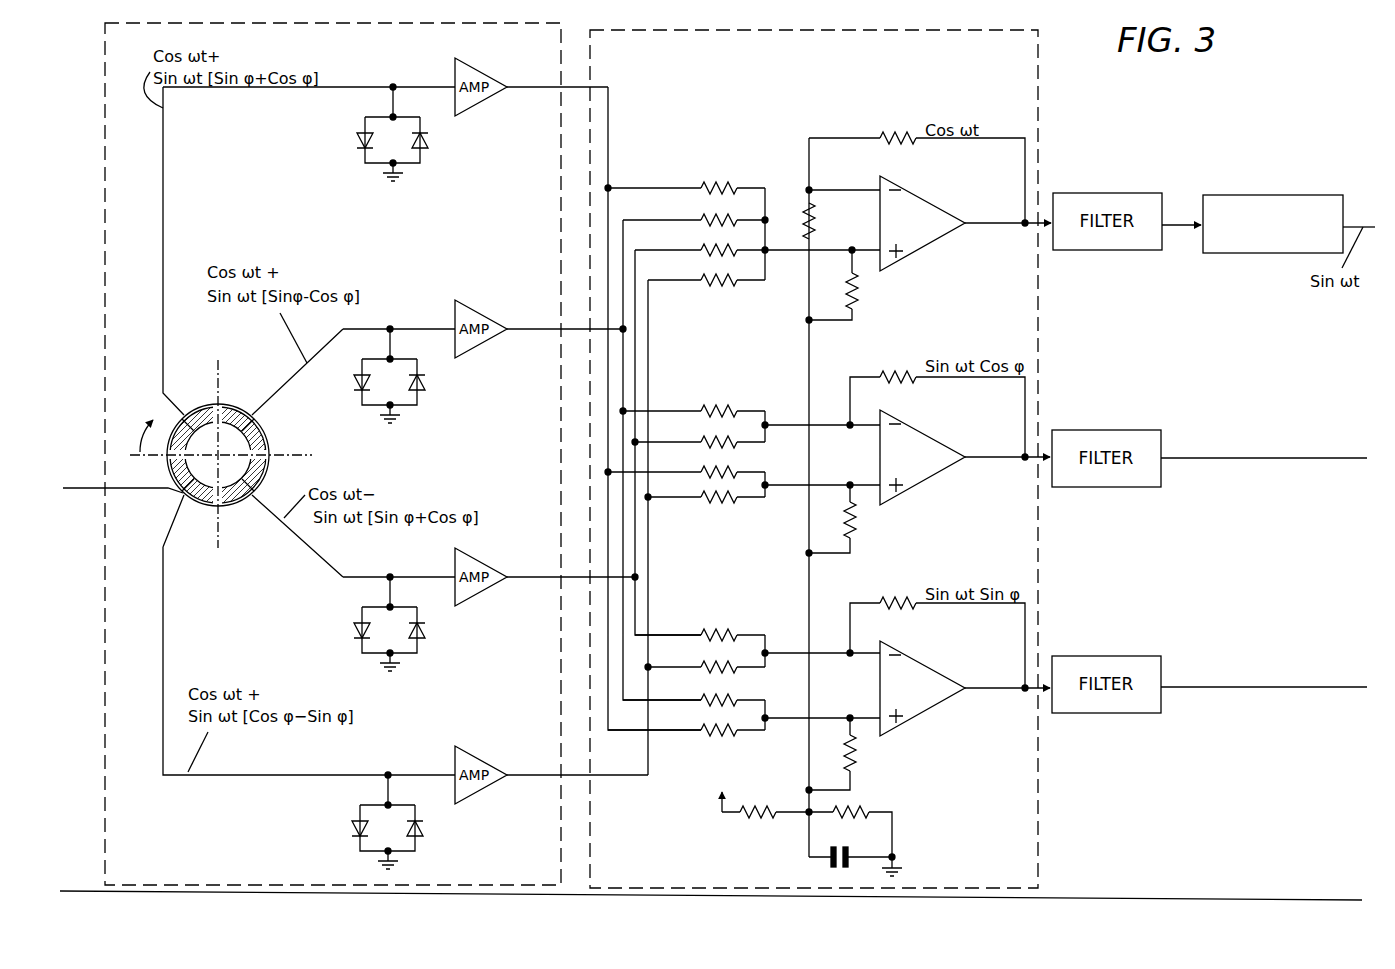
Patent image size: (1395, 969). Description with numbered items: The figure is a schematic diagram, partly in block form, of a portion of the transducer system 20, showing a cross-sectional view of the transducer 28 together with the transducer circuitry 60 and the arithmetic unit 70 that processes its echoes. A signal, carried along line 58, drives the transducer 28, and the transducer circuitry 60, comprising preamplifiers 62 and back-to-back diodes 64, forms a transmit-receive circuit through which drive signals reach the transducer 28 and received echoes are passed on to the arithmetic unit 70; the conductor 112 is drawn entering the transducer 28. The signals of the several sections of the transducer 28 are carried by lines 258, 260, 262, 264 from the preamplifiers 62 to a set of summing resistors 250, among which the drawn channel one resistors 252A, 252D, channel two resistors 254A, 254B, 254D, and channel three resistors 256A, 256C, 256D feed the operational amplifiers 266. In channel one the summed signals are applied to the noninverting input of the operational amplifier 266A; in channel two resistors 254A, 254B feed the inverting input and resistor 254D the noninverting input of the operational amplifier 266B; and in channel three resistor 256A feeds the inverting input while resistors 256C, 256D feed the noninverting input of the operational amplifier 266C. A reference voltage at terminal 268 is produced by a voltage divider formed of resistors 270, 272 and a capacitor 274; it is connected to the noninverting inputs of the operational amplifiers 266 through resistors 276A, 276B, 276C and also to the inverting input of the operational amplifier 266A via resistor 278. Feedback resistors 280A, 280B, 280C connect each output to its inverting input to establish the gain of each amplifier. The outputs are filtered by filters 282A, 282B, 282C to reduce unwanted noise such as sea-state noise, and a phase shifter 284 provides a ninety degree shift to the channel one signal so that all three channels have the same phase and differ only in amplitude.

The transducer circuitry 60 is at (102, 98).
The arithmetic unit 70 is at (1040, 47).
The line 58 is at (1117, 898).
The transducer system 20 is at (1085, 137).
The transducer 28 is at (176, 499).
The conductor 112 is at (85, 489).
The preamplifiers 62 is at (485, 101).
The back-to-back diodes 64 is at (356, 136).
The line 258 is at (524, 87).
The line 260 is at (516, 330).
The line 262 is at (520, 577).
The line 264 is at (520, 775).
The summing resistors 250 is at (742, 481).
The summing resistor 252A is at (668, 188).
The summing resistor 252D is at (680, 281).
The summing resistor 254A is at (682, 411).
The summing resistor 254B is at (678, 443).
The summing resistor 254D is at (683, 498).
The summing resistor 256A is at (682, 635).
The summing resistor 256C is at (680, 667).
The summing resistor 256D is at (686, 731).
The operational amplifiers 266 is at (969, 765).
The resistor 278 is at (816, 214).
The resistor 276A is at (858, 295).
The resistor 276B is at (858, 528).
The resistor 276C is at (854, 750).
The feedback resistor 280A is at (885, 138).
The feedback resistor 280B is at (905, 378).
The feedback resistor 280C is at (898, 606).
The operational amplifier 266A is at (905, 257).
The operational amplifier 266B is at (920, 487).
The operational amplifier 266C is at (922, 715).
The resistor 270 is at (758, 810).
The terminal 268 is at (812, 811).
The resistor 272 is at (870, 812).
The capacitor 274 is at (833, 867).
The filter 282A is at (1121, 193).
The filter 282B is at (1114, 430).
The filter 282C is at (1118, 656).
The phase shifter 284 is at (1261, 195).